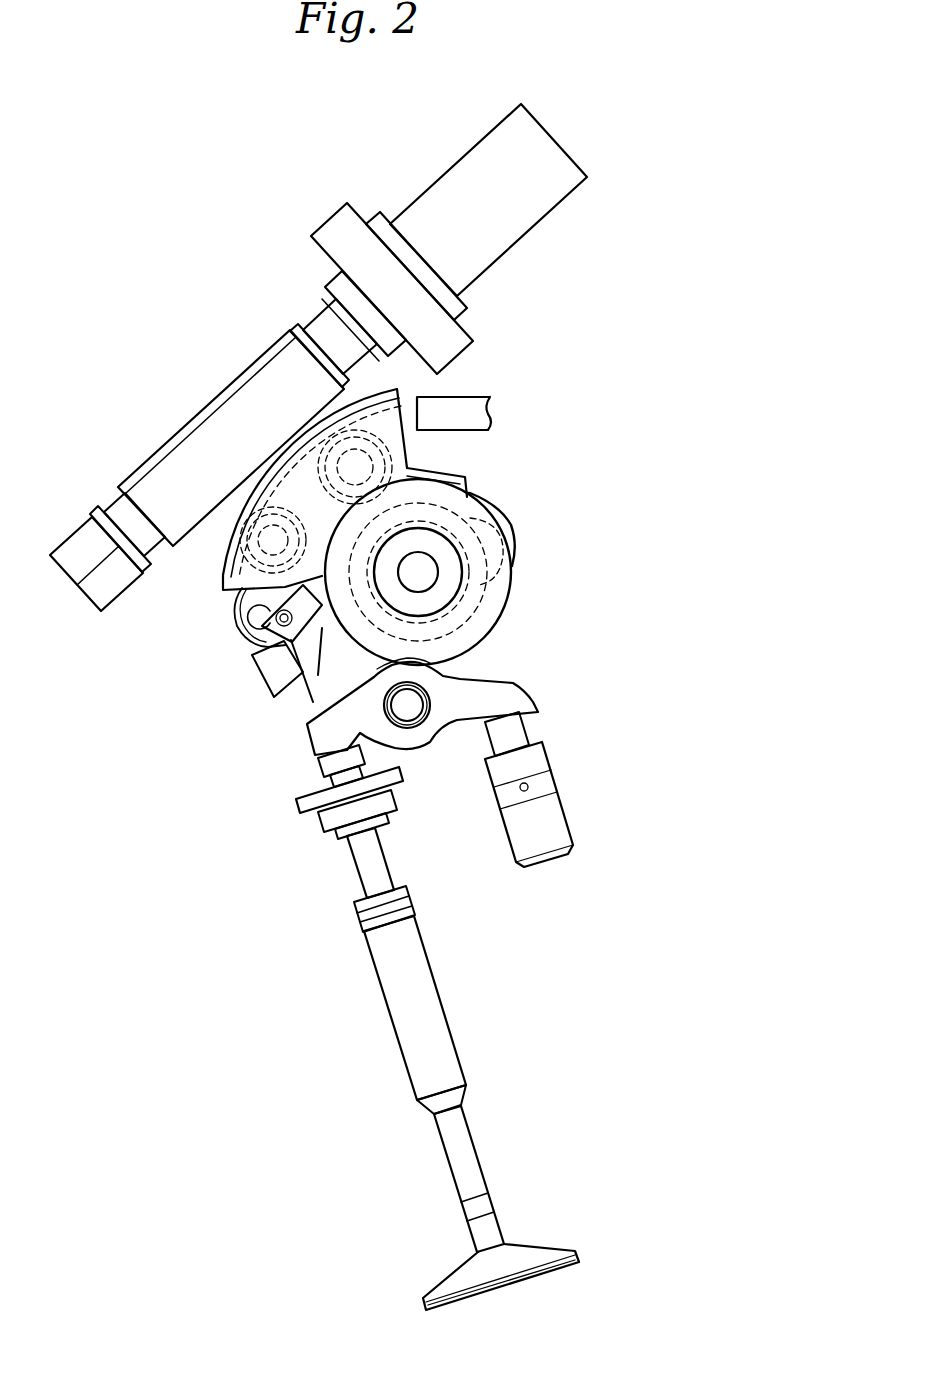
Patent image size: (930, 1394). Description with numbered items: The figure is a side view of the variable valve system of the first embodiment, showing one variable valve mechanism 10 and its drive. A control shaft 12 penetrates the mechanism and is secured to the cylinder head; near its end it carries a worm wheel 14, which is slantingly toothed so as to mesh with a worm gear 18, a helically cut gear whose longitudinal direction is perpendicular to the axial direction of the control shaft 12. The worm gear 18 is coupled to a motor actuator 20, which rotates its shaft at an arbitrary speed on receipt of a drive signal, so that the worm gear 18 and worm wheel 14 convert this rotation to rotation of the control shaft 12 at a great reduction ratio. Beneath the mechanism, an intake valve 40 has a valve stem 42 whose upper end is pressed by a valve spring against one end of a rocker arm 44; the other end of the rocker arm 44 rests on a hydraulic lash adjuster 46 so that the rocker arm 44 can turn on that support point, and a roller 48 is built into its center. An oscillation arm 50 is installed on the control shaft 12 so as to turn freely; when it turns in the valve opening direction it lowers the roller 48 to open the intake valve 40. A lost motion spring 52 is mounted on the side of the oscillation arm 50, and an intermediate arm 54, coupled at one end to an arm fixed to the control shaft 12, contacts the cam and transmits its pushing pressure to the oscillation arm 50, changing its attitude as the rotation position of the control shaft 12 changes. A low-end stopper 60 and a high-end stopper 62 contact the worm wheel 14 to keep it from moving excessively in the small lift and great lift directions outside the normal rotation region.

The variable valve mechanism 10 is at (522, 504).
The control shaft 12 is at (461, 590).
The worm wheel 14 is at (400, 450).
The worm gear 18 is at (208, 440).
The motor actuator 20 is at (425, 183).
The intake valve 40 is at (452, 1288).
The valve stem 42 is at (468, 1168).
The rocker arm 44 is at (520, 695).
The hydraulic lash adjuster 46 is at (560, 818).
The roller 48 is at (407, 710).
The oscillation arm 50 is at (318, 672).
The lost motion spring 52 is at (513, 520).
The intermediate arm 54 is at (258, 627).
The low-end stopper 60 is at (472, 406).
The high-end stopper 62 is at (260, 670).